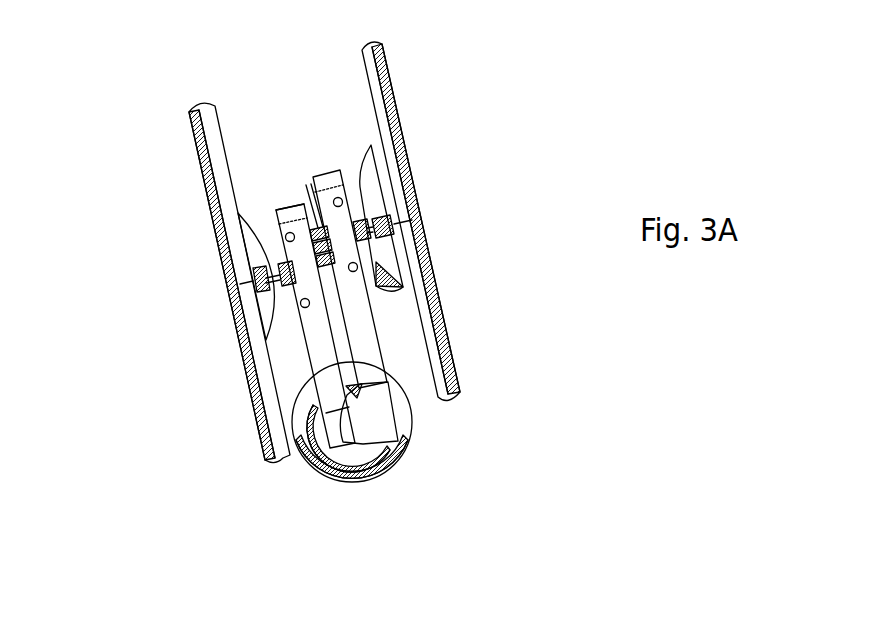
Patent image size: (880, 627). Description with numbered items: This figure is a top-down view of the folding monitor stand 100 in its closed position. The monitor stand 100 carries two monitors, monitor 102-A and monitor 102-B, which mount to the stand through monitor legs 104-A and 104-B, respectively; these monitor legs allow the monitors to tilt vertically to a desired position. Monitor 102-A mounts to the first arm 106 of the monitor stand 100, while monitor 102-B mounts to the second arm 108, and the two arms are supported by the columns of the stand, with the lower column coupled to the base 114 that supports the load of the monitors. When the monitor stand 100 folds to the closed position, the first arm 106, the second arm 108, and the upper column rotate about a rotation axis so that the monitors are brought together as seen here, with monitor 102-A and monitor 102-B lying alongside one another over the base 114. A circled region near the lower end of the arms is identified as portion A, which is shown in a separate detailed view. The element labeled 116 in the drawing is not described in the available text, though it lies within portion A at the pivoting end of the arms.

The folding monitor stand 100 is at (586, 74).
The monitor 102-A is at (415, 210).
The monitor 102-B is at (238, 258).
The monitor leg 104-A is at (300, 217).
The monitor leg 104-B is at (317, 263).
The first arm 106 is at (325, 175).
The second arm 108 is at (288, 215).
The base 114 is at (425, 410).
The wedge 116 is at (370, 427).
The portion A is at (413, 448).